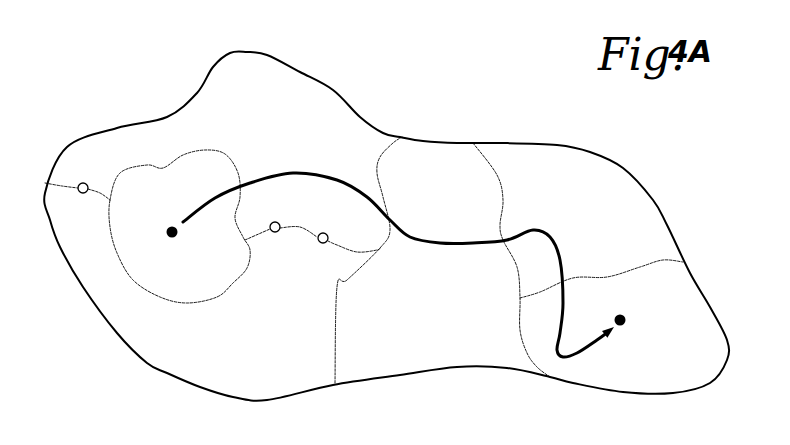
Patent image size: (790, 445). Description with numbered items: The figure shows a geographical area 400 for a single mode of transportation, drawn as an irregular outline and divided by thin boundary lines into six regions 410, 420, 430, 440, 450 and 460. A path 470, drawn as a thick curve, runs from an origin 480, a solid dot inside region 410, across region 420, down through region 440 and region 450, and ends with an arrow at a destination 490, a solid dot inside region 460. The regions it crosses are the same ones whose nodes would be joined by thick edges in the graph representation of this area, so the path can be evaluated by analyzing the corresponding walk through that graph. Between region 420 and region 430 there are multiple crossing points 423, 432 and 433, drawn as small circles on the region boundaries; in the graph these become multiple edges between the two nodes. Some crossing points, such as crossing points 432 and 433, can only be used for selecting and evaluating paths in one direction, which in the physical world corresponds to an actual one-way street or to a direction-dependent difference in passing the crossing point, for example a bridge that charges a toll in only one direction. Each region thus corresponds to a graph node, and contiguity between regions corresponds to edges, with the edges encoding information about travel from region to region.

The geographical area 400 is at (147, 365).
The region 410 is at (198, 265).
The region 420 is at (254, 120).
The crossing point 423 is at (80, 183).
The region 430 is at (241, 361).
The crossing point 432 is at (275, 233).
The crossing point 433 is at (323, 244).
The region 440 is at (419, 338).
The region 450 is at (578, 197).
The region 460 is at (666, 369).
The path 470 is at (431, 237).
The origin 480 is at (170, 229).
The destination 490 is at (624, 317).